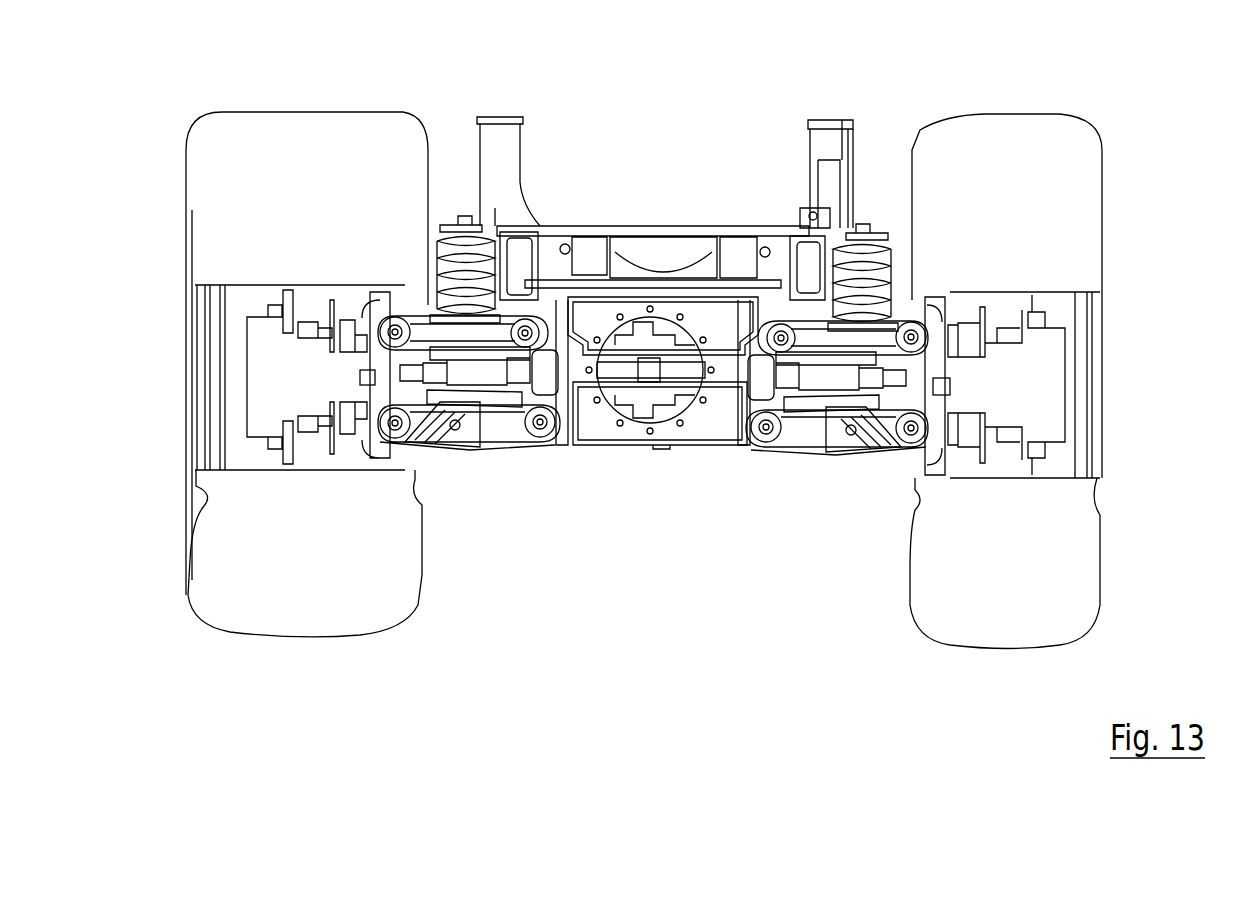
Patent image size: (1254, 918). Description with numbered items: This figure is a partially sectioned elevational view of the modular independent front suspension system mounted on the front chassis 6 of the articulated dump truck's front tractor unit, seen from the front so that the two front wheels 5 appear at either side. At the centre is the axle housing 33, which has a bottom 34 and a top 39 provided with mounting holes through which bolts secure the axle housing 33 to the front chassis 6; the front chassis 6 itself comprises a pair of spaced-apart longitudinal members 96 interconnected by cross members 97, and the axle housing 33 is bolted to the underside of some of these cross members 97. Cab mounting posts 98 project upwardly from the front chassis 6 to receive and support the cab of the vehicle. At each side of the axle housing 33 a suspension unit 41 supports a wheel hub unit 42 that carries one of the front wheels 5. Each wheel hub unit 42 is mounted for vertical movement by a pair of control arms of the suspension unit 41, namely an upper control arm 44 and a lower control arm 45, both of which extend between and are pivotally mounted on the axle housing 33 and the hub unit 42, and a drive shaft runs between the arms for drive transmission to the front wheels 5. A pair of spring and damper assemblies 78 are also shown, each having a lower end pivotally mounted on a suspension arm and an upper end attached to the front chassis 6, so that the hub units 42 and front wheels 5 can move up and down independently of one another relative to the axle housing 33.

The front wheels 5 is at (423, 560).
The front chassis 6 is at (862, 157).
The axle housing 33 is at (652, 455).
The bottom 34 is at (608, 455).
The top 39 is at (657, 268).
The suspension unit 41 is at (448, 465).
The wheel hub unit 42 is at (318, 485).
The upper control arm 44 is at (409, 258).
The lower control arm 45 is at (488, 440).
The spring and damper assemblies 78 is at (433, 310).
The longitudinal members 96 is at (530, 232).
The cross members 97 is at (632, 290).
The cab mounting posts 98 is at (500, 117).